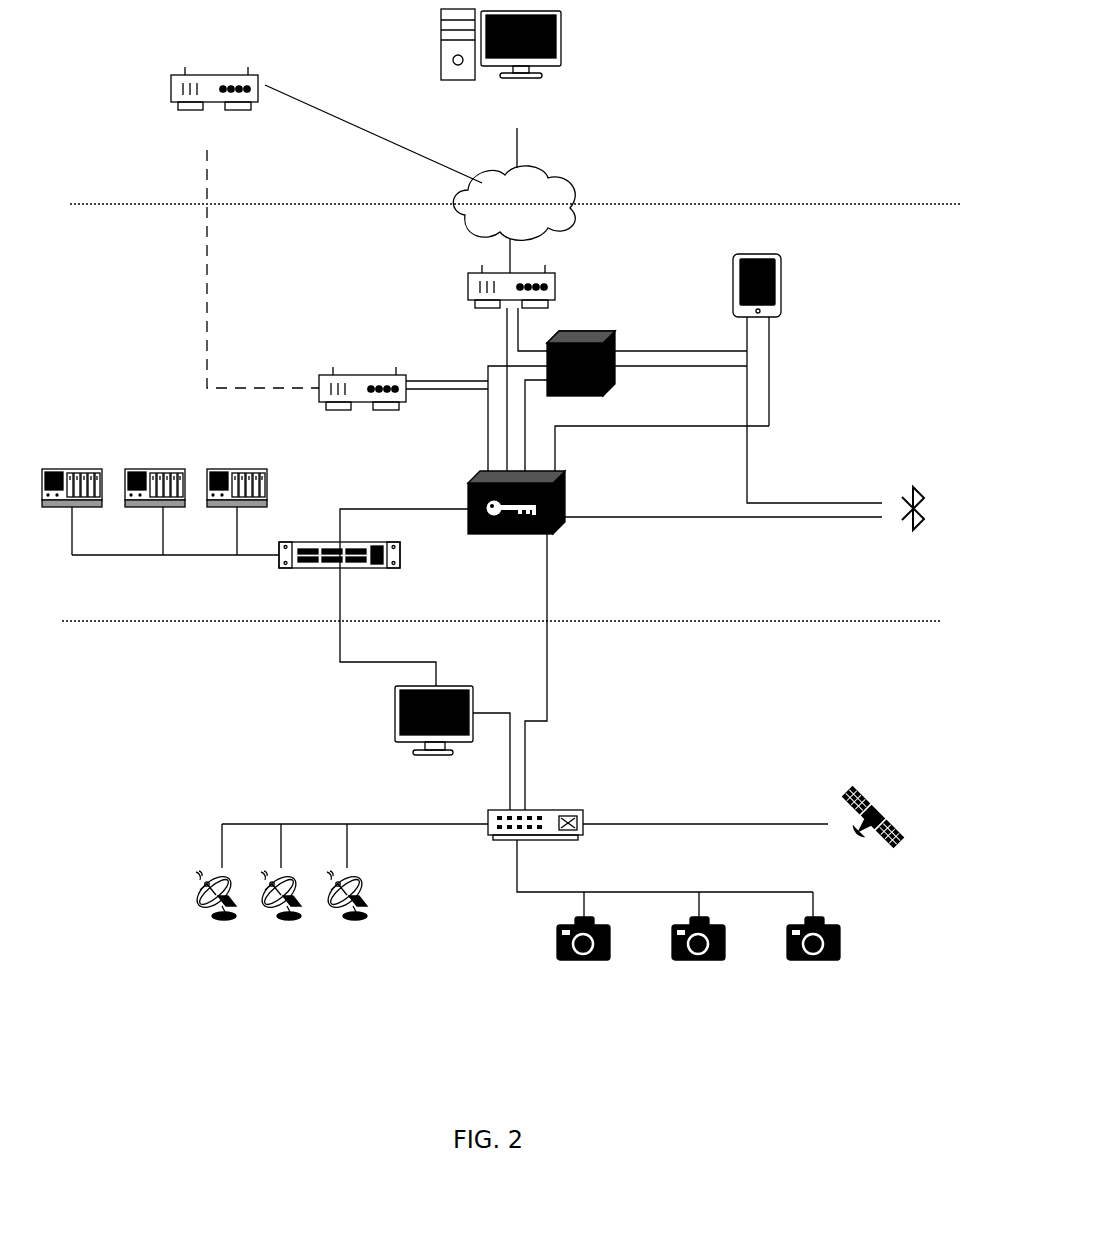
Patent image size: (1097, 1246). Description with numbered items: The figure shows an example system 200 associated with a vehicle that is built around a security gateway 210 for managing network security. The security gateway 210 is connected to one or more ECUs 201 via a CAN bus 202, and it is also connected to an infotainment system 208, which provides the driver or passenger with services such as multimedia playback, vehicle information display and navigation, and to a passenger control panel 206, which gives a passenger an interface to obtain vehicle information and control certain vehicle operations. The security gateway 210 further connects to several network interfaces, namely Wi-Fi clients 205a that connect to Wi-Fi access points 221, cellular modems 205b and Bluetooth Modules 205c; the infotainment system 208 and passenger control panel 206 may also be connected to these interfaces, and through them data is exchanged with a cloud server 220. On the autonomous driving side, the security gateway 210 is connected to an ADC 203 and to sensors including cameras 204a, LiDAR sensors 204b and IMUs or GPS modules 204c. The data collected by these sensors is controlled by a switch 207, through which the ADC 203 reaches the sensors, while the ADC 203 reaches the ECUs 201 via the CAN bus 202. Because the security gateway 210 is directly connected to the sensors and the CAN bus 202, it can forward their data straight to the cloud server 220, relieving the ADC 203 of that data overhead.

The system 200 is at (828, 72).
The ECUs 201 is at (237, 532).
The CAN bus 202 is at (313, 604).
The ADC 203 is at (385, 722).
The cameras 204a is at (607, 993).
The LiDAR sensors 204b is at (338, 958).
The IMUs or GPS modules 204c is at (827, 793).
The Wi-Fi clients 205a is at (355, 352).
The cellular modems 205b is at (563, 266).
The Bluetooth Modules 205c is at (917, 486).
The passenger control panel 206 is at (807, 371).
The switch 207 is at (525, 851).
The infotainment system 208 is at (621, 336).
The security gateway 210 is at (583, 532).
The cloud server 220 is at (523, 141).
The Wi-Fi access points 221 is at (326, 227).